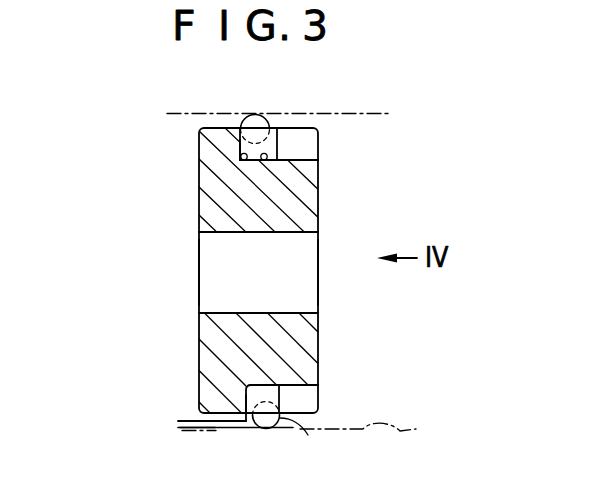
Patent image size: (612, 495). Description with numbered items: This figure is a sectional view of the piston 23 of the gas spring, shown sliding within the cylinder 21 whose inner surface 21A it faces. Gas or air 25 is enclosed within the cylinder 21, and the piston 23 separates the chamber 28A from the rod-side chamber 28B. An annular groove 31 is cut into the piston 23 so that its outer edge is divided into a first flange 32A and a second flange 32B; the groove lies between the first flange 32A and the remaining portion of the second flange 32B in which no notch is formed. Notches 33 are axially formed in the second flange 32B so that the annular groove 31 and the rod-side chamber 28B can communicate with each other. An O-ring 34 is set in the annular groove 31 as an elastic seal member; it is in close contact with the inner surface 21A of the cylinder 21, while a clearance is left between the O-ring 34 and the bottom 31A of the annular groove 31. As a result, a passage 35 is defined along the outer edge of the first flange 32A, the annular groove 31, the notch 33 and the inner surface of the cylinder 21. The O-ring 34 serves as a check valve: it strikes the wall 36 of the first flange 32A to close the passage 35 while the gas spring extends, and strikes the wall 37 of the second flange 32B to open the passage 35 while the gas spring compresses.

The cylinder 21 is at (175, 112).
The inner surface 21A is at (172, 423).
The piston 23 is at (150, 160).
The gas or air 25 is at (213, 430).
The chamber 28A is at (128, 316).
The rod-side chamber 28B is at (448, 316).
The annular groove 31 is at (232, 148).
The bottom of the annular groove 31A is at (265, 160).
The first flange 32A is at (210, 134).
The second flange 32B is at (295, 134).
The notch 33 is at (318, 134).
The O-ring 34 is at (272, 131).
The passage 35 is at (306, 378).
The wall of the first flange 36 is at (244, 160).
The wall of the second flange 37 is at (308, 435).